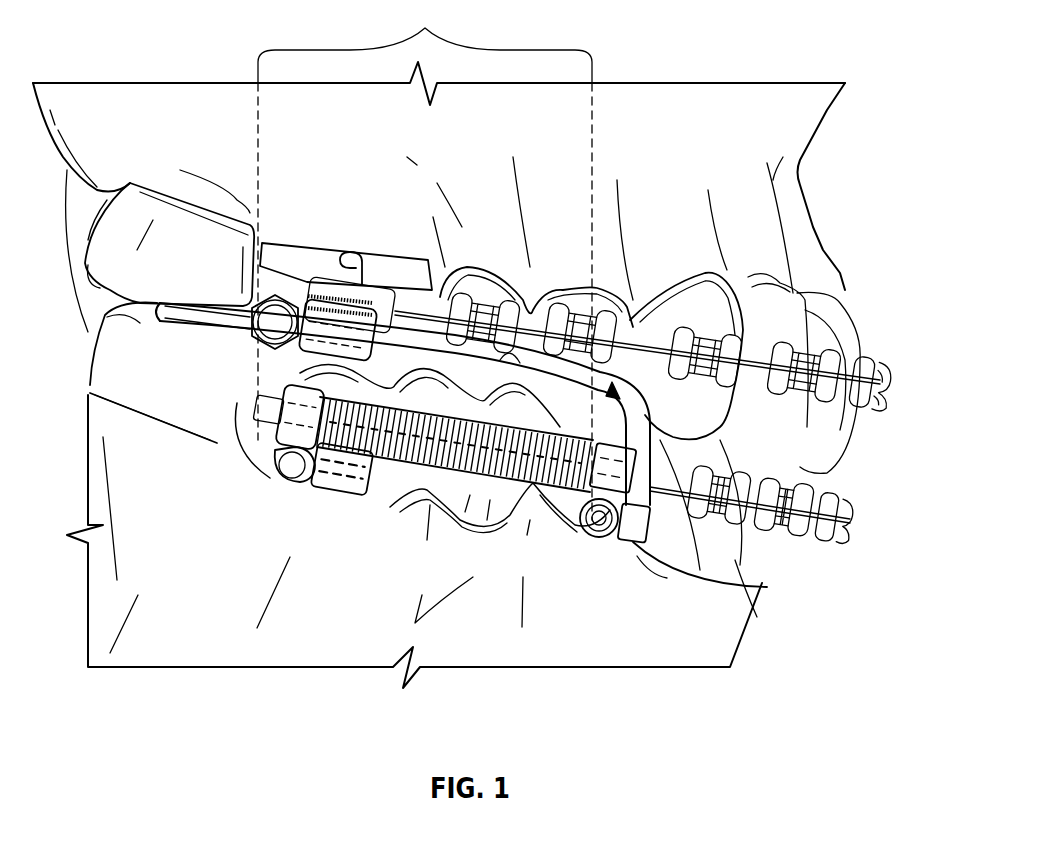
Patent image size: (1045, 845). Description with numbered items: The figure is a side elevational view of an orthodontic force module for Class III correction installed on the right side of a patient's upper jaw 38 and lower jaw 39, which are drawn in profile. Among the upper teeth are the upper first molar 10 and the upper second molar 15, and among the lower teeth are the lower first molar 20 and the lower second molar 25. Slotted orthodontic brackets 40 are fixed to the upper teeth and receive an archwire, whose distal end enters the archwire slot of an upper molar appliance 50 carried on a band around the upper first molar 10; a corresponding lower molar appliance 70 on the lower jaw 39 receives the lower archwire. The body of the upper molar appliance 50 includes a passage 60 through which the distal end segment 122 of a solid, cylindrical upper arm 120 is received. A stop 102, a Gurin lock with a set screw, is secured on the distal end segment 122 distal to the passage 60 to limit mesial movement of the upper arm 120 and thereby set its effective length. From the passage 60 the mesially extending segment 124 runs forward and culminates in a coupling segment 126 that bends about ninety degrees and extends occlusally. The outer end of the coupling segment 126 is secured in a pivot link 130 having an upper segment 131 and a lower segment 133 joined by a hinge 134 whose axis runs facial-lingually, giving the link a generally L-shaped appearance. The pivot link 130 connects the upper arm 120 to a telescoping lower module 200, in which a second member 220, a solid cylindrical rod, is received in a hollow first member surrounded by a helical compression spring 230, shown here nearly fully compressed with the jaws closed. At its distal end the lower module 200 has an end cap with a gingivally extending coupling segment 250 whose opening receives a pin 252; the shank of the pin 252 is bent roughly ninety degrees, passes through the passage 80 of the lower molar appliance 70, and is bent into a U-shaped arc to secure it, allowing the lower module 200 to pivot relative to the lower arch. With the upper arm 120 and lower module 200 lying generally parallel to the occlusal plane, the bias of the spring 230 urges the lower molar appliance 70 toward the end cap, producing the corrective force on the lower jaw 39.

The upper first molar 10 is at (274, 298).
The upper second molar 15 is at (143, 190).
The lower first molar 20 is at (372, 500).
The lower second molar 25 is at (90, 383).
The upper jaw 38 is at (817, 97).
The lower jaw 39 is at (718, 650).
The slotted orthodontic appliances (brackets) 40 is at (885, 378).
The upper molar appliance 50 is at (352, 253).
The passage 60 is at (378, 297).
The lower molar appliance 70 is at (347, 520).
The passage 80 is at (328, 482).
The stop (Gurin lock) 102 is at (288, 290).
The upper arm 120 is at (520, 363).
The distal end segment 122 is at (197, 317).
The mesially extending segment 124 is at (633, 317).
The coupling segment 126 is at (807, 517).
The pivot link 130 is at (760, 583).
The upper segment 131 is at (577, 507).
The lower segment 133 is at (757, 617).
The hinge 134 is at (613, 543).
The lower module 200 is at (425, 41).
The second member 220 is at (217, 446).
The helical compression spring 230 is at (438, 503).
The coupling segment 250 is at (260, 468).
The pin 252 is at (290, 467).